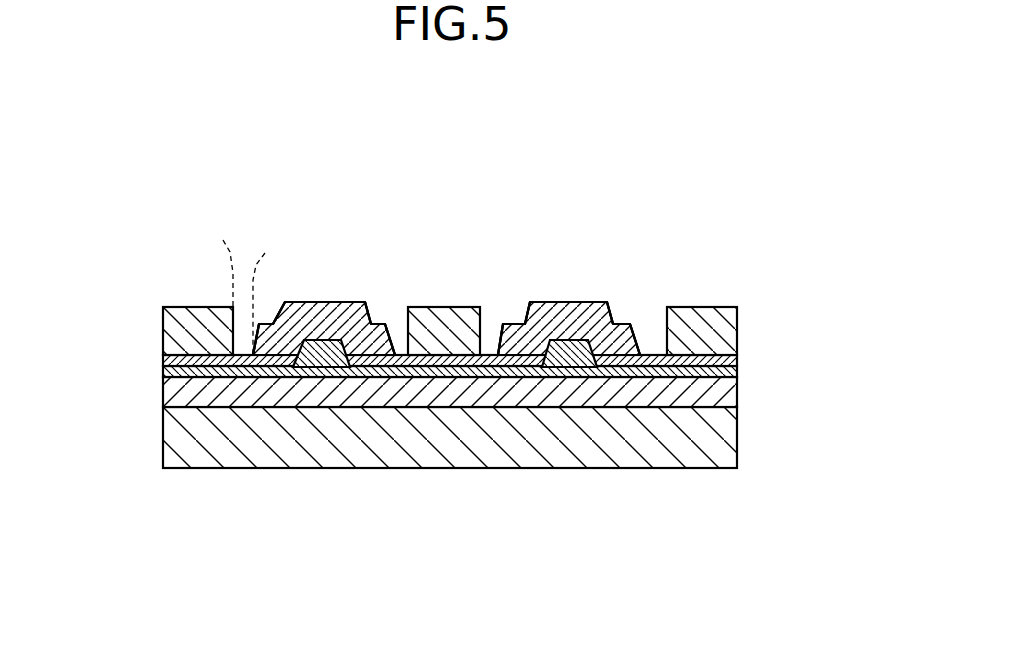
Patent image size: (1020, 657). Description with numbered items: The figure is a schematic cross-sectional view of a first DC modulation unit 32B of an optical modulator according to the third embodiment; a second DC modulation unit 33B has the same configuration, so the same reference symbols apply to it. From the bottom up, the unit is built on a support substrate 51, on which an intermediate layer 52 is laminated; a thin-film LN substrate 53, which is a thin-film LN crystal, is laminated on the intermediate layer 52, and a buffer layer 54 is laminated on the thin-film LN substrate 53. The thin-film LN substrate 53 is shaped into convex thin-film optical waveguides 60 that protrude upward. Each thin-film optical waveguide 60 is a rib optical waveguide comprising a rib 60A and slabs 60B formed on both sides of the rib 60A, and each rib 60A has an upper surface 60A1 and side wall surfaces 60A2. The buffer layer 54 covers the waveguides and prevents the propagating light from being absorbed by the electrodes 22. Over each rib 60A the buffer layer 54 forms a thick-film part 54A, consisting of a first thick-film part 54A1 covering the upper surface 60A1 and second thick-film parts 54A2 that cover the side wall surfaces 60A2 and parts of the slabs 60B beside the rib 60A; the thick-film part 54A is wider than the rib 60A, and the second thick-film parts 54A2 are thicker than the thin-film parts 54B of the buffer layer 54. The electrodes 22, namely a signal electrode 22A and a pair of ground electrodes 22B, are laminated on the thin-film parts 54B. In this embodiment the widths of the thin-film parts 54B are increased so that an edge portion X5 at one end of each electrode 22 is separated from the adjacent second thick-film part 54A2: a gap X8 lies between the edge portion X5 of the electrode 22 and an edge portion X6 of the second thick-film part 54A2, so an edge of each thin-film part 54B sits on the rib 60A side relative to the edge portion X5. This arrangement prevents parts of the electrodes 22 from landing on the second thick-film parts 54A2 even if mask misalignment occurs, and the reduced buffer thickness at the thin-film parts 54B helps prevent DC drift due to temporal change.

The support substrate 51 is at (723, 448).
The intermediate layer 52 is at (738, 400).
The thin-film LN substrate 53 is at (738, 370).
The buffer layer 54 is at (737, 357).
The thick-film part 54A is at (482, 330).
The first thick-film part 54A1 is at (340, 309).
The second thick-film part 54A2 is at (389, 330).
The thin-film part 54B is at (170, 381).
The electrode 22 is at (447, 266).
The signal electrode 22A is at (452, 307).
The ground electrode 22B is at (183, 307).
The thin-film optical waveguide 60 is at (441, 349).
The rib 60A is at (563, 308).
The upper surface 60A1 is at (318, 302).
The side wall surface 60A2 is at (268, 341).
The slab 60B is at (252, 372).
The edge portion X5 is at (210, 265).
The edge portion X6 is at (274, 299).
The gap X8 is at (243, 344).
The first DC modulation unit 32B is at (820, 194).
The second DC modulation unit 33B is at (866, 170).